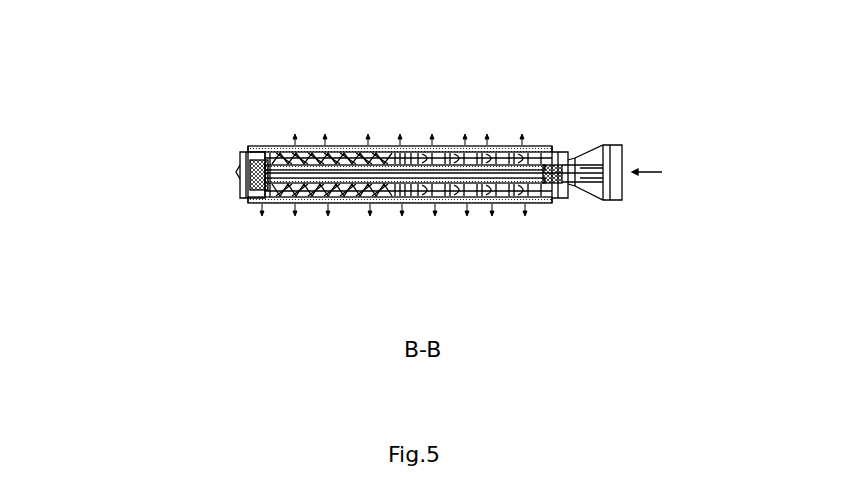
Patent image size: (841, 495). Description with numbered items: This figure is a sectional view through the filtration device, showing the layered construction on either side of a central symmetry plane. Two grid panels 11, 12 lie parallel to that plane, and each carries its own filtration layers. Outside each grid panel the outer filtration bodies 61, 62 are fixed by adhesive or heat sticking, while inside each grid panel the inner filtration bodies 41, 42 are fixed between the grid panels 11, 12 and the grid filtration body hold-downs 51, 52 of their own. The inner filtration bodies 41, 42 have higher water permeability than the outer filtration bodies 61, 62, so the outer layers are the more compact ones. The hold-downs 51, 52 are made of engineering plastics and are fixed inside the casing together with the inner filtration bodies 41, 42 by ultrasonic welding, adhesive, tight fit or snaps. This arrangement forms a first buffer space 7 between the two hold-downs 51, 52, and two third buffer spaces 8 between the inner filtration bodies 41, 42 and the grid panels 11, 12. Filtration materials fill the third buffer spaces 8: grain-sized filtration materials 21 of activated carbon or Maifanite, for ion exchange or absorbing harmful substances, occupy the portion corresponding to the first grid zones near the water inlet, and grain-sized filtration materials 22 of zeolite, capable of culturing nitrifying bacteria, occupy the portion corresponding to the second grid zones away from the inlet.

The first buffer space 7 is at (503, 195).
The third buffer space 8 is at (583, 187).
The grid panel 11 is at (241, 167).
The grid panel 12 is at (241, 178).
The grain-sized filtration materials for ion exchange or absorbing harmful substance 21 is at (486, 150).
The grain-sized filtration materials capable of culturing nitrifying bacteria 22 is at (281, 148).
The inner filtration body 41 is at (323, 150).
The inner filtration body 42 is at (392, 180).
The grid filtration body hold-down 51 is at (241, 159).
The grid filtration body hold-down 52 is at (242, 187).
The outer filtration body 61 is at (410, 150).
The outer filtration body 62 is at (342, 200).